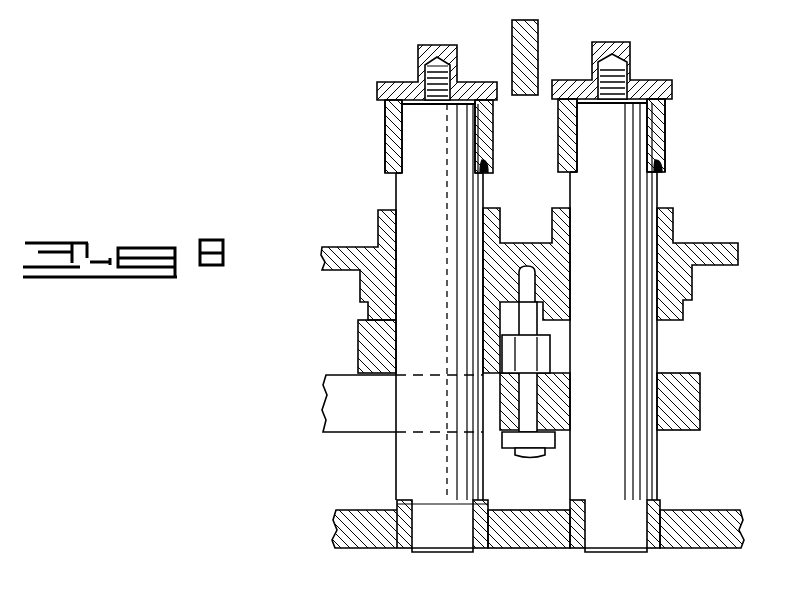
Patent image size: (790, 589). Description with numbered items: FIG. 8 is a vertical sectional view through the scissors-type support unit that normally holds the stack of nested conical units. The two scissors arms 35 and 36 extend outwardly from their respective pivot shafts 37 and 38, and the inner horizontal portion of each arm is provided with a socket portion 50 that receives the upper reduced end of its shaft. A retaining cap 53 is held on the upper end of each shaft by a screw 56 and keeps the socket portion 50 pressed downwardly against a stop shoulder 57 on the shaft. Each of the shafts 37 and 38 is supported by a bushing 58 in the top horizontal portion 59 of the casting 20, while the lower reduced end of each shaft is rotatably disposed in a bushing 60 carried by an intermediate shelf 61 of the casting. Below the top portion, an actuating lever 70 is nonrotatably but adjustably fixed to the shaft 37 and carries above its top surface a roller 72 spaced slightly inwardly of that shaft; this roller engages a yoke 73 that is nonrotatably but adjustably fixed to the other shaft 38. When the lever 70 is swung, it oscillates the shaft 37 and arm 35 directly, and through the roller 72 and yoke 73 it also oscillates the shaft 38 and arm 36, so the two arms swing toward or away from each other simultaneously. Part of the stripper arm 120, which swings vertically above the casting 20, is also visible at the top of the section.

The casting 20 is at (371, 512).
The scissors arm 35 is at (665, 114).
The scissors arm 36 is at (387, 118).
The pivot shaft 37 is at (616, 244).
The pivot shaft 38 is at (434, 244).
The socket portion 50 is at (390, 143).
The retaining cap 53 is at (404, 84).
The screw 56 is at (440, 62).
The stop shoulder 57 is at (488, 168).
The bushing 58 is at (553, 222).
The top horizontal portion 59 is at (358, 248).
The bushing 60 is at (485, 535).
The intermediate shelf 61 is at (396, 543).
The actuating lever 70 is at (700, 418).
The roller 72 is at (552, 356).
The yoke 73 is at (362, 340).
The stripper arm 120 is at (538, 38).